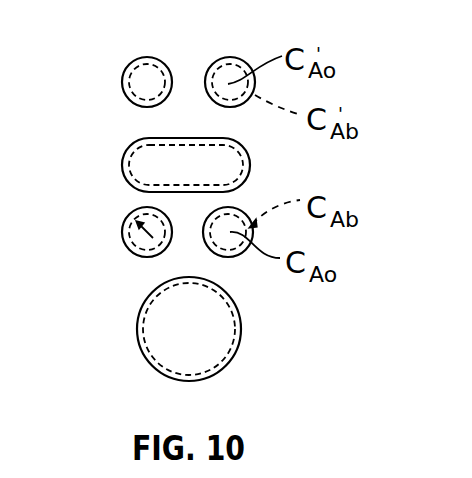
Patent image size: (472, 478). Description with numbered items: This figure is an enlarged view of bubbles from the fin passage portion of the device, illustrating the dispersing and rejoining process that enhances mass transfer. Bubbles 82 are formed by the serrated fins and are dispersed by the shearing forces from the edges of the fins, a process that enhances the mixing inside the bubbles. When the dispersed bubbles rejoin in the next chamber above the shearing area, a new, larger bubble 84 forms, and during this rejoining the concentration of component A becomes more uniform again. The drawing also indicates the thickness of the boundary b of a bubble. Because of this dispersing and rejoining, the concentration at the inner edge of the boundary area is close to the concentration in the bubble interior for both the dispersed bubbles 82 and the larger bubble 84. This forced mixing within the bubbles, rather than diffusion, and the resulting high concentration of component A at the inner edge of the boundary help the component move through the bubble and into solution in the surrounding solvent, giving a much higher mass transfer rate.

The bubbles 82 is at (137, 331).
The larger bubble 84 is at (122, 166).
The thickness of the boundary b is at (130, 214).